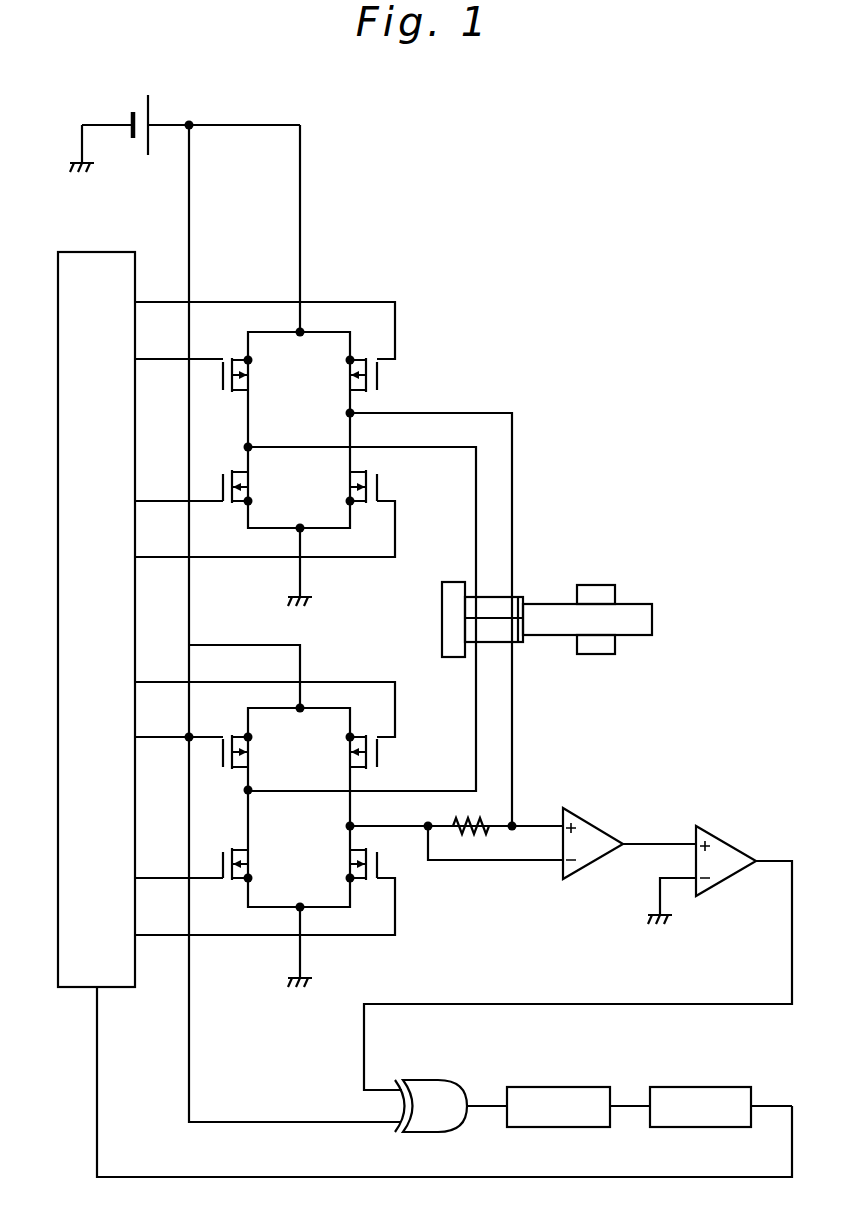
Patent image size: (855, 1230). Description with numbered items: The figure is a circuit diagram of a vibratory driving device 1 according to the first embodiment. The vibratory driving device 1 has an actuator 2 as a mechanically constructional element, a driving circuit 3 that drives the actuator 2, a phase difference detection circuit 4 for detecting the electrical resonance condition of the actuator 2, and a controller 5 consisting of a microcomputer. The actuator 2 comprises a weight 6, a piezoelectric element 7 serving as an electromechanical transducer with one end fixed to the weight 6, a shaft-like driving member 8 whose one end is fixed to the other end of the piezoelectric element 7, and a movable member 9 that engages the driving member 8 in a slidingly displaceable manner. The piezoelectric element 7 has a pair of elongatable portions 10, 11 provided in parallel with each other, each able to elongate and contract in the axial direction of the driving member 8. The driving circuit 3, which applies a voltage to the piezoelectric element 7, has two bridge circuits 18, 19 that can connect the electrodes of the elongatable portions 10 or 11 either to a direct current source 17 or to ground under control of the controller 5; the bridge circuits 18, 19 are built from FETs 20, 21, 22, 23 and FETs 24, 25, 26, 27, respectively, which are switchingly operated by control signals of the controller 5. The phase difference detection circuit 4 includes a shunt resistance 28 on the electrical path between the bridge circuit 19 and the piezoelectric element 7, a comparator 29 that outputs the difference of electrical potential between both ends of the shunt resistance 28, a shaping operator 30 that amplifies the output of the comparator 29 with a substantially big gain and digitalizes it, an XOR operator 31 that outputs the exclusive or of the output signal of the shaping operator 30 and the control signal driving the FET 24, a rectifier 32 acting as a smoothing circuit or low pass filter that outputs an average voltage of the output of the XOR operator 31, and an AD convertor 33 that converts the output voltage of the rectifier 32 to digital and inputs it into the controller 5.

The vibratory driving device 1 is at (547, 144).
The actuator 2 is at (635, 531).
The driving circuit 3 is at (383, 208).
The phase difference detection circuit 4 is at (660, 788).
The controller 5 is at (75, 252).
The weight 6 is at (442, 618).
The piezoelectric element 7 is at (500, 586).
The driving member 8 is at (645, 604).
The movable member 9 is at (597, 585).
The elongatable portion 10 is at (519, 597).
The elongatable portion 11 is at (519, 642).
The direct current source 17 is at (132, 110).
The bridge circuit 18 is at (333, 295).
The bridge circuit 19 is at (333, 675).
The FET 20 is at (250, 375).
The FET 21 is at (352, 375).
The FET 22 is at (360, 487).
The FET 23 is at (250, 487).
The FET 24 is at (250, 752).
The FET 25 is at (352, 752).
The FET 26 is at (360, 864).
The FET 27 is at (250, 864).
The shunt resistance 28 is at (460, 820).
The comparator 29 is at (593, 812).
The shaping operator 30 is at (727, 838).
The XOR operator 31 is at (427, 1080).
The rectifier 32 is at (553, 1087).
The AD convertor 33 is at (699, 1087).